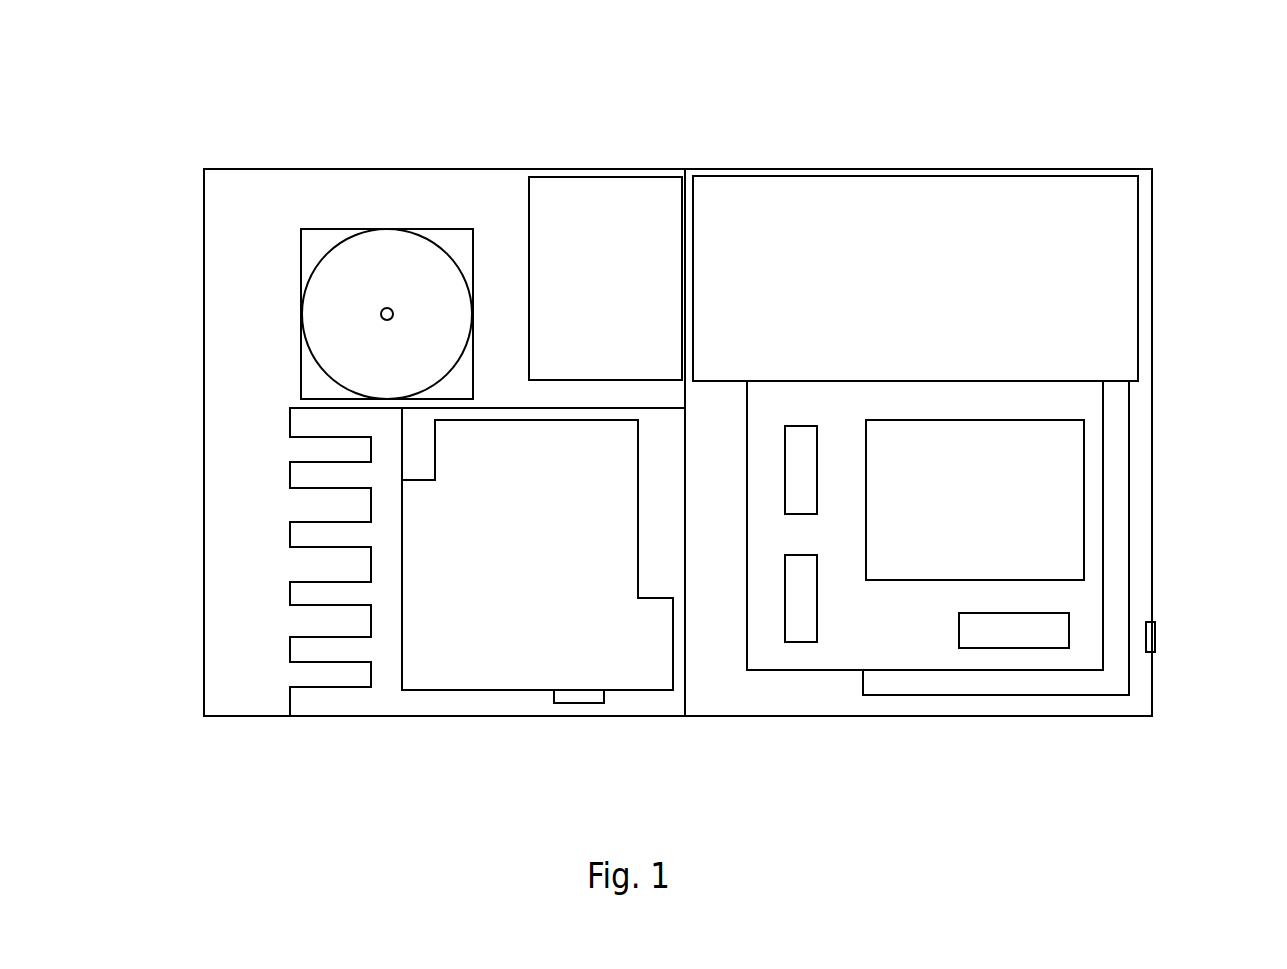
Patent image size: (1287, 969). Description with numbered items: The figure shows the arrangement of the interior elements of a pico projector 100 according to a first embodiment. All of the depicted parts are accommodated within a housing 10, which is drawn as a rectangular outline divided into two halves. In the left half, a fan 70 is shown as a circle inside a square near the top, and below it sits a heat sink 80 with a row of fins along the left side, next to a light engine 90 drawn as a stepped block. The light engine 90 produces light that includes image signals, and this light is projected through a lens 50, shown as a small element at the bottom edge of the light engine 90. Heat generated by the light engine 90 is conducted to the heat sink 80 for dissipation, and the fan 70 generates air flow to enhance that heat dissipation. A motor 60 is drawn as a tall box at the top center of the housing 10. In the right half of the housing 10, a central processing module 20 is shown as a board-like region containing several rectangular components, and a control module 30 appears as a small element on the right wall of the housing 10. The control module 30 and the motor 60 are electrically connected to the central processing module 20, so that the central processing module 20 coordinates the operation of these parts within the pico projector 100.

The pico projector 100 is at (141, 44).
The housing 10 is at (1152, 320).
The central processing module 20 is at (1045, 513).
The control module 30 is at (1153, 640).
The lens 50 is at (577, 695).
The motor 60 is at (628, 195).
The fan 70 is at (313, 249).
The heat sink 80 is at (310, 532).
The light engine 90 is at (497, 599).